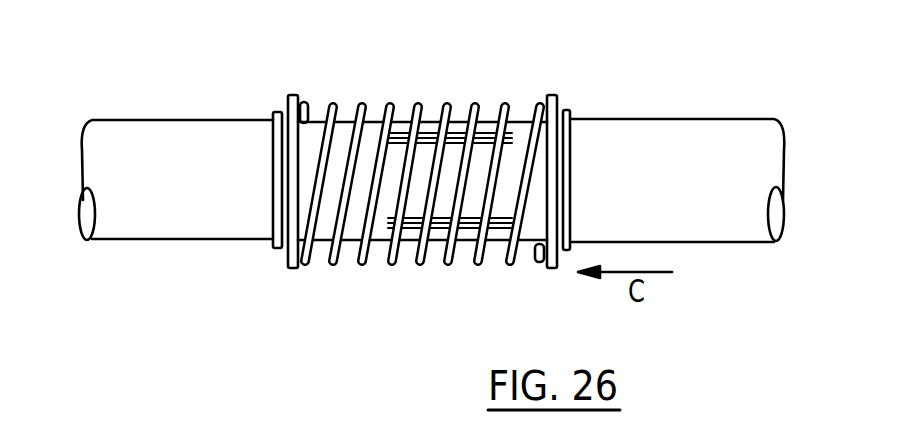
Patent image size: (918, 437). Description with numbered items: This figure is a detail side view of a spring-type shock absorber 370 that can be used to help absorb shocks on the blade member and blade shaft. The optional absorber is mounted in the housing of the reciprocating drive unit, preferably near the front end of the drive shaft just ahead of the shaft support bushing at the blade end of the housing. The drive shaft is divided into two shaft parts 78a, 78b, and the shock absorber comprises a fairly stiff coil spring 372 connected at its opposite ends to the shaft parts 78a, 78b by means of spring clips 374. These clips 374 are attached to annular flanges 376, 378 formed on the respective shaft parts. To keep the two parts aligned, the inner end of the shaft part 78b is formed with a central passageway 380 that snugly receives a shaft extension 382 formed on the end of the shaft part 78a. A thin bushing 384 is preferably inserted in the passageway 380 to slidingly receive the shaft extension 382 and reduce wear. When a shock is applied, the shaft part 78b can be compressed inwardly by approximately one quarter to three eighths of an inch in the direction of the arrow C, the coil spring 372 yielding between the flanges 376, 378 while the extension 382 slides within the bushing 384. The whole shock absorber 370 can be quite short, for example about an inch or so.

The shaft part 78a is at (160, 138).
The shaft part 78b is at (721, 130).
The spring-type shock absorber 370 is at (455, 77).
The coil spring 372 is at (390, 259).
The spring clips 374 is at (277, 110).
The annular flange 376 is at (293, 94).
The annular flange 378 is at (555, 95).
The central passageway 380 is at (497, 259).
The shaft extension 382 is at (345, 120).
The bushing 384 is at (460, 249).